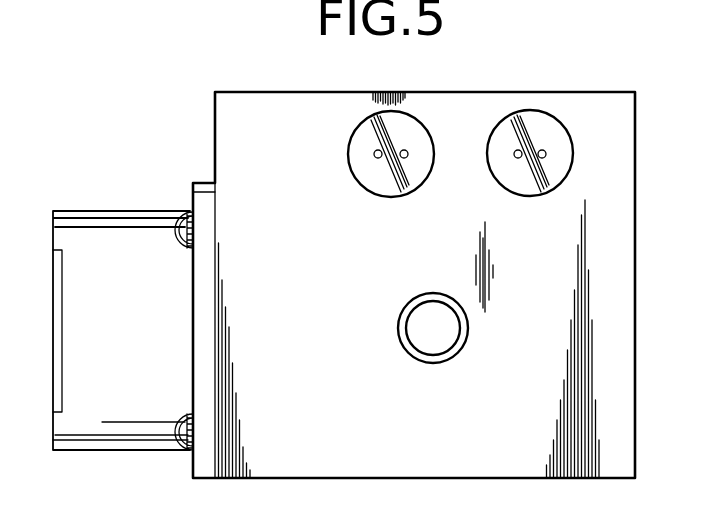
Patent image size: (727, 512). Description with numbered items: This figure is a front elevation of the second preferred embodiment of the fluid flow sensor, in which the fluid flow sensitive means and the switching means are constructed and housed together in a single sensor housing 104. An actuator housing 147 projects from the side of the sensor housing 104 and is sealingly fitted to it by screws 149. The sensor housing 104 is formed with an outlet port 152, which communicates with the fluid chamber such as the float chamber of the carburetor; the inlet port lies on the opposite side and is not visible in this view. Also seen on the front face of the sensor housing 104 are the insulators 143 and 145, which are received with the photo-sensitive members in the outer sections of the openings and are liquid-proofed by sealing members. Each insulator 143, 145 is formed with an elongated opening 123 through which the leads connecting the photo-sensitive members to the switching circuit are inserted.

The sensor housing 104 is at (585, 80).
The insulator 143 is at (398, 130).
The insulator 145 is at (530, 121).
The elongated opening 123 is at (406, 160).
The outlet port 152 is at (440, 338).
The actuator housing 147 is at (96, 211).
The screws 149 is at (183, 240).